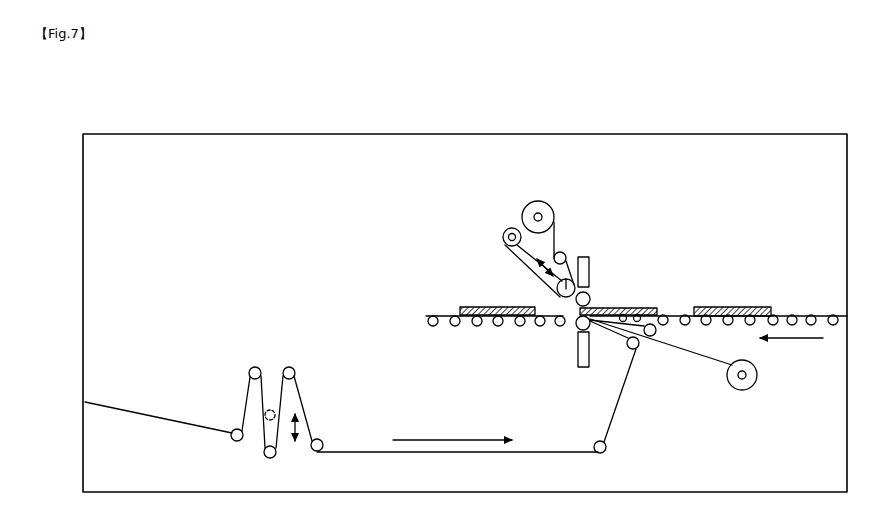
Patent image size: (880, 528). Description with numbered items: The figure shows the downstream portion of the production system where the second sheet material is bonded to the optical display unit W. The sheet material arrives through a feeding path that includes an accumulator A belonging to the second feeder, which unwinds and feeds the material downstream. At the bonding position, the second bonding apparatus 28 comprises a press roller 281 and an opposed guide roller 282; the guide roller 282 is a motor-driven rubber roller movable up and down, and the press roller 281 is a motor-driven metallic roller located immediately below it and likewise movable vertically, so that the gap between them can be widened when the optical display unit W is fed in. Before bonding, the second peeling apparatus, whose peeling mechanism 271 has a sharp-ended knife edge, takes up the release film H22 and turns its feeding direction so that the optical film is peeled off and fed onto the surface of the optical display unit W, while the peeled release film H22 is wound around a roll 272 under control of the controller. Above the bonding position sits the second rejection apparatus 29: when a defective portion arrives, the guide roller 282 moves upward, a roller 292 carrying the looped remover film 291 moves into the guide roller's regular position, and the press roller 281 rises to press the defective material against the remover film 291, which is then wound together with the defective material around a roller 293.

The second rejection apparatus 29 is at (478, 209).
The remover film 291 is at (527, 203).
The roller 292 is at (568, 255).
The roller 293 is at (503, 237).
The second bonding apparatus 28 is at (604, 266).
The guide roller 282 is at (591, 294).
The press roller 281 is at (588, 329).
The peeling mechanism 271 is at (650, 337).
The roll 272 is at (752, 388).
The release film H22 is at (703, 349).
The optical display unit W is at (727, 303).
The accumulator A is at (273, 345).